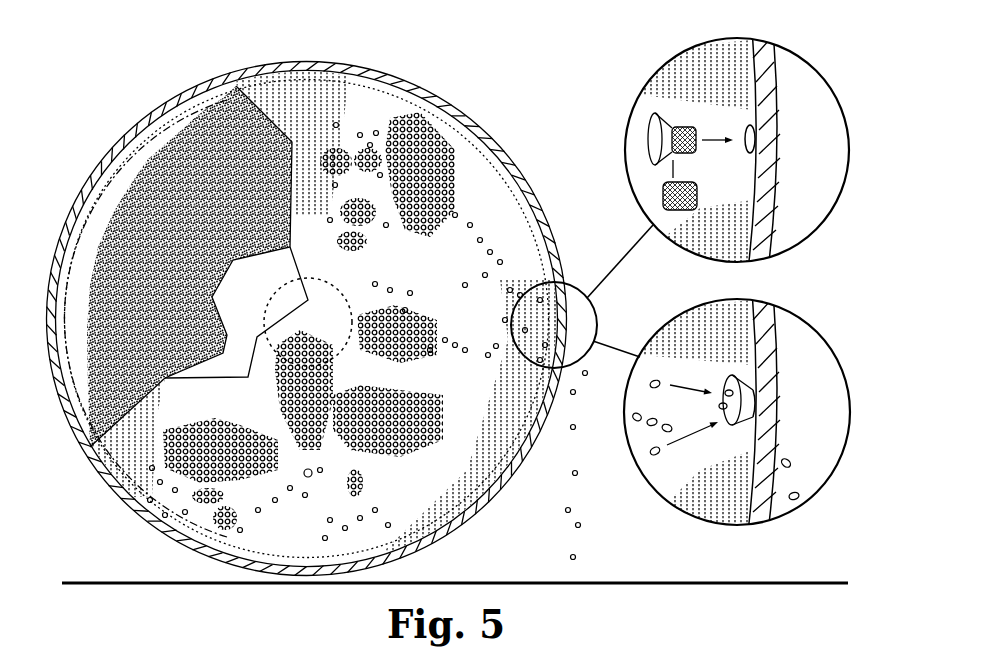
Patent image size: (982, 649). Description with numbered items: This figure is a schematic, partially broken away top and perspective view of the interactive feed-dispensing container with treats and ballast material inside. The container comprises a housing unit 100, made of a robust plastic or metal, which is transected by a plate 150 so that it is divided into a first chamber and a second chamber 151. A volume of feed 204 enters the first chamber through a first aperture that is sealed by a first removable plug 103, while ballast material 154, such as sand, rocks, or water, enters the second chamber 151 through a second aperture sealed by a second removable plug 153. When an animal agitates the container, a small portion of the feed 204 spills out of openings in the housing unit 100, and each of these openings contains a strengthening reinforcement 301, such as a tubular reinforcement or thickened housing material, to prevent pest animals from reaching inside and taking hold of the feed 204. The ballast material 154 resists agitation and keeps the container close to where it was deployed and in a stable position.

The housing unit 100 is at (145, 118).
The first removable plug 103 is at (763, 140).
The plate 150 is at (167, 410).
The second chamber 151 is at (243, 288).
The second removable plug 153 is at (282, 300).
The ballast material 154 is at (266, 157).
The feed 204 is at (490, 253).
The strengthening reinforcement 301 is at (663, 187).